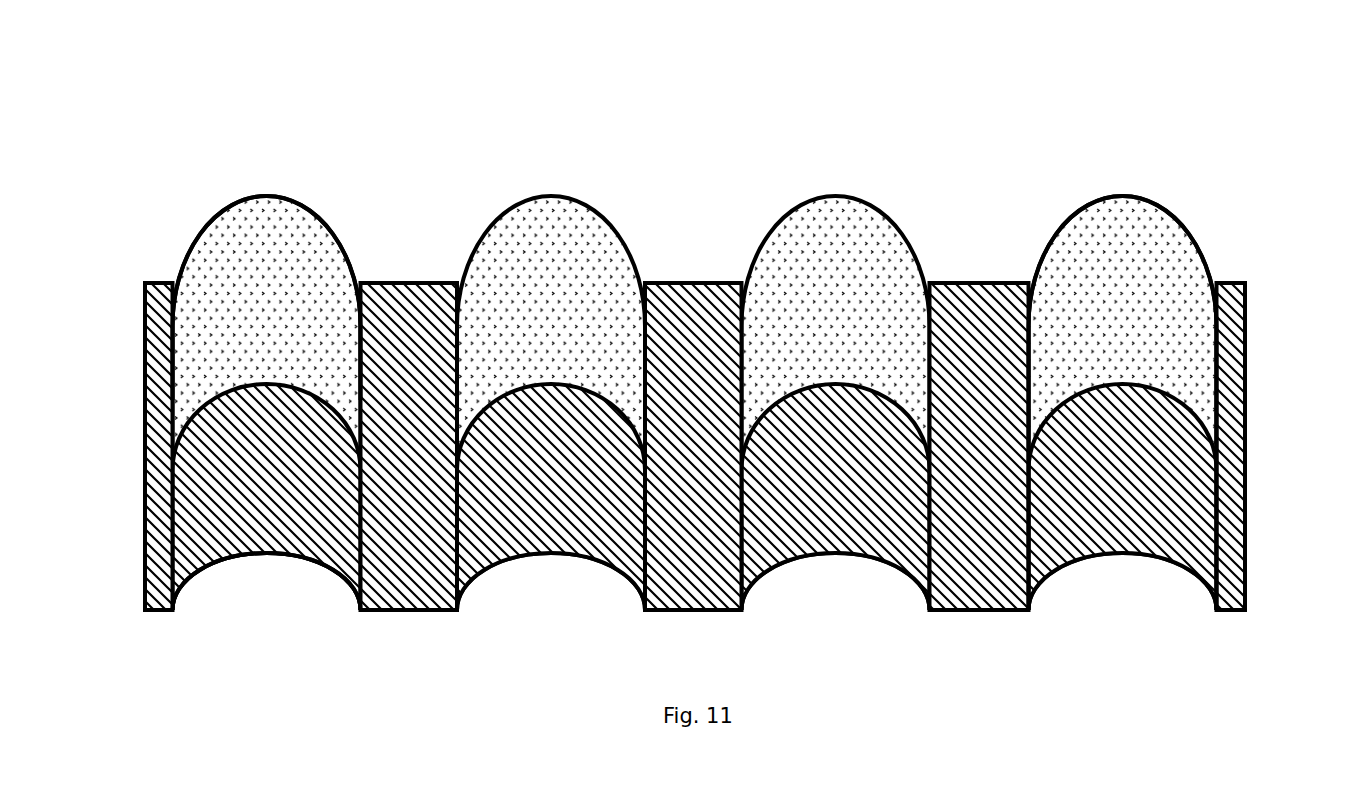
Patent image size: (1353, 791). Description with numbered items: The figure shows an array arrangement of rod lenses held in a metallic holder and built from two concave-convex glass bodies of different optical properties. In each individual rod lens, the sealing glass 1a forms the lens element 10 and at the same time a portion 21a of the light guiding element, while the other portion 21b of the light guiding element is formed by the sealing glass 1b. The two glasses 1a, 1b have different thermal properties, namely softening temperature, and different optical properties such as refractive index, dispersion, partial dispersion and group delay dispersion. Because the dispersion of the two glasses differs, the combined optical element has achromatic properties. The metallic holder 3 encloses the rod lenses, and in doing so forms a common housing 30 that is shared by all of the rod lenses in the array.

The sealing glass 1a is at (247, 267).
The sealing glass 1b is at (217, 510).
The metallic holder 3 is at (1233, 283).
The lens element 10 is at (1118, 237).
The portion of the light guiding element 21a is at (1168, 368).
The portion of the light guiding element 21b is at (1155, 518).
The common housing 30 is at (402, 284).